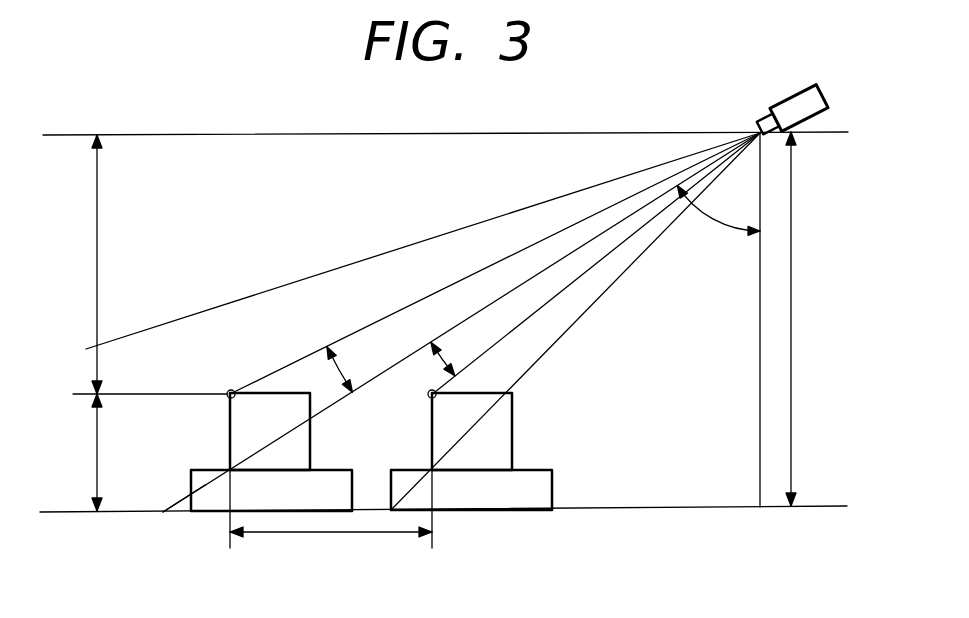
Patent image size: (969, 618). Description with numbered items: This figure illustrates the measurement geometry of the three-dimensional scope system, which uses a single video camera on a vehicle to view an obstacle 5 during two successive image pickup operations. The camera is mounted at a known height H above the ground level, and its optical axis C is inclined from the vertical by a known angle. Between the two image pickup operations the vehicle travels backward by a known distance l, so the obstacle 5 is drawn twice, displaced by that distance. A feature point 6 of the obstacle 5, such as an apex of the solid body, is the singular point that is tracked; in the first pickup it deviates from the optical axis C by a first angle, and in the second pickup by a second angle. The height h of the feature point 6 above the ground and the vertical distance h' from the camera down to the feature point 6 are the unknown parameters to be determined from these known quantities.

The obstacle 5 is at (432, 443).
The feature point 6 is at (328, 383).
The optical axis C is at (184, 503).
The height of the video camera H is at (799, 319).
The height of the feature point h is at (85, 452).
The vertical distance from the video camera to the feature point h' is at (86, 264).
The vehicle traveling distance l is at (378, 509).